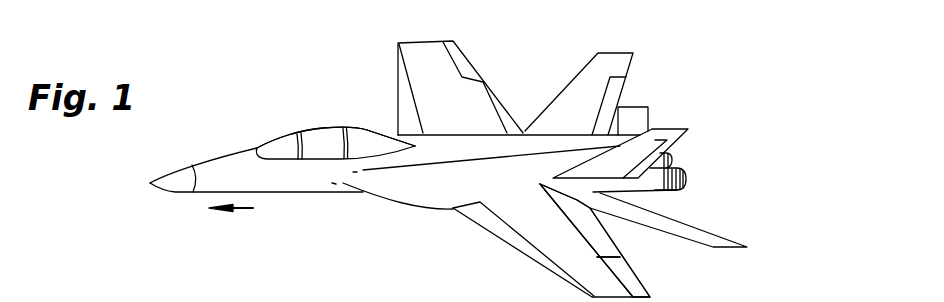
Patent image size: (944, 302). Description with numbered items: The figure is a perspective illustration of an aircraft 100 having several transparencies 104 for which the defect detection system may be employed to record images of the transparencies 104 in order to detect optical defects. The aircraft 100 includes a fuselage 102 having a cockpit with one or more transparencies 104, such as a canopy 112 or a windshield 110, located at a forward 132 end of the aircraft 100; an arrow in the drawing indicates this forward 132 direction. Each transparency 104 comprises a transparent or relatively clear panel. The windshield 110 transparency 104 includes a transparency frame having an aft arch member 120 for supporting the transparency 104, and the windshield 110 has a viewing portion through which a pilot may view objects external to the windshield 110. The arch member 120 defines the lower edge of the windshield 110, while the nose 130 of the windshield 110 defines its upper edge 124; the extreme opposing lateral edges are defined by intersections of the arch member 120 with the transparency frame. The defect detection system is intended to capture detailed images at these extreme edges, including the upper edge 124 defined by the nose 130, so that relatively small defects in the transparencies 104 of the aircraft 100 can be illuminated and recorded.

The aircraft 100 is at (282, 94).
The fuselage 102 is at (467, 133).
The transparency 104 is at (279, 140).
The windshield 110 is at (279, 140).
The canopy 112 is at (368, 128).
The aft arch member 120 is at (308, 158).
The upper edge 124 is at (567, 243).
The nose 130 is at (518, 243).
The forward 132 is at (242, 209).